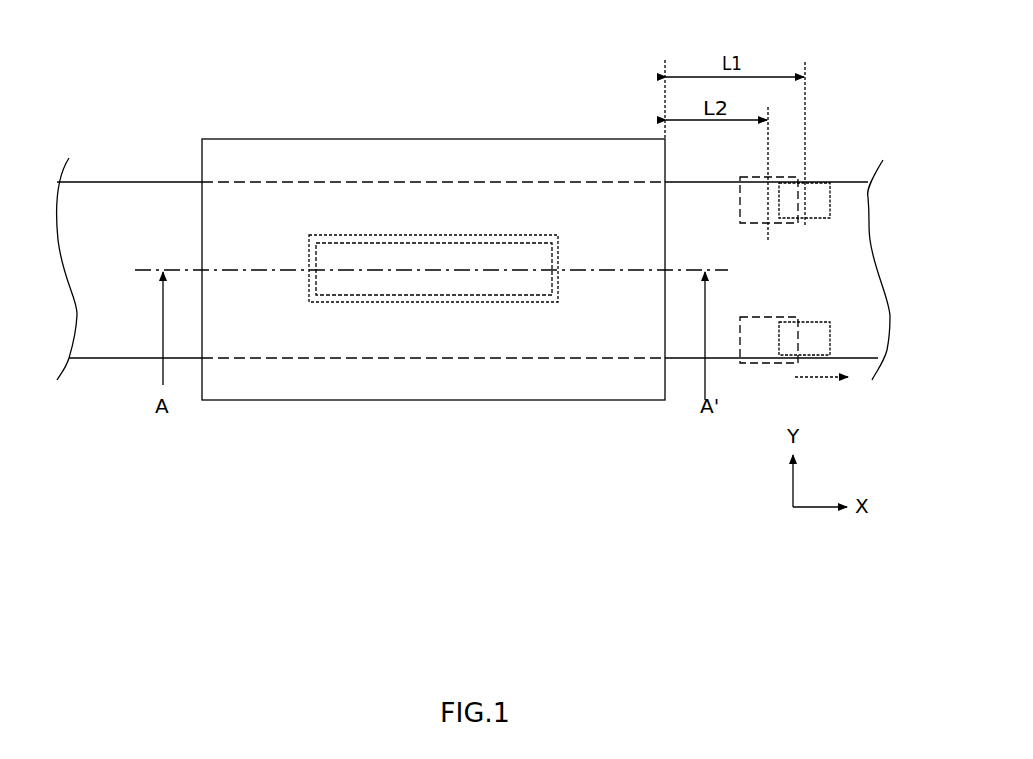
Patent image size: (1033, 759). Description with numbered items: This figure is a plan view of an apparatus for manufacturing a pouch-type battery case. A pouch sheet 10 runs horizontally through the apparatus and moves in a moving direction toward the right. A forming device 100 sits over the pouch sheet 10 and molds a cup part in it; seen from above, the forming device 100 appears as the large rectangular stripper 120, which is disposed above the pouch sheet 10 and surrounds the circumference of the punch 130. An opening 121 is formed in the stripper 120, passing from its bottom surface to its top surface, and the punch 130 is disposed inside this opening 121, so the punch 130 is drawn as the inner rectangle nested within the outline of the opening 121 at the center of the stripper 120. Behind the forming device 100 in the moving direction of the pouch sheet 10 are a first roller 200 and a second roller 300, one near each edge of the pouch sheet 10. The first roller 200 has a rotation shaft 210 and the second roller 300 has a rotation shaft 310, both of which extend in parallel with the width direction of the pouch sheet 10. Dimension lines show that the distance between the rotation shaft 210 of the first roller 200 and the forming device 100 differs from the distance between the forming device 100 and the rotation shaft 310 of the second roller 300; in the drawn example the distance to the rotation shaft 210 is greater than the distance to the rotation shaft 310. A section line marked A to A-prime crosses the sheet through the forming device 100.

The pouch sheet 10 is at (120, 182).
The forming device 100 is at (433, 228).
The stripper 120 is at (630, 147).
The opening 121 is at (352, 235).
The punch 130 is at (511, 257).
The first roller 200 is at (823, 336).
The rotation shaft of the first roller 210 is at (830, 195).
The second roller 300 is at (758, 365).
The rotation shaft of the second roller 310 is at (767, 213).